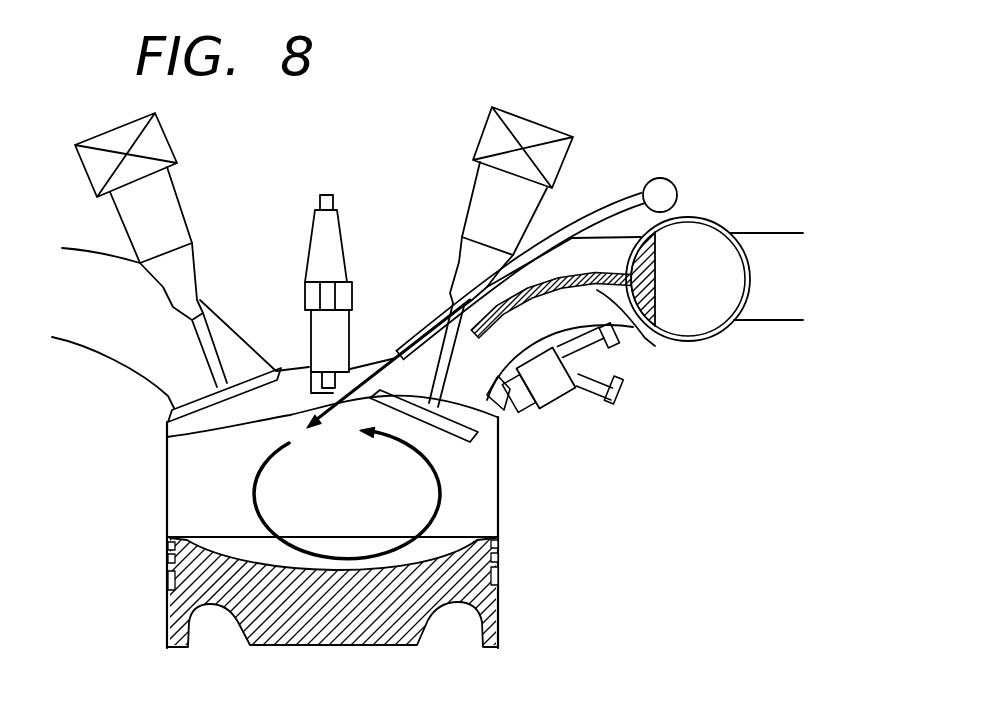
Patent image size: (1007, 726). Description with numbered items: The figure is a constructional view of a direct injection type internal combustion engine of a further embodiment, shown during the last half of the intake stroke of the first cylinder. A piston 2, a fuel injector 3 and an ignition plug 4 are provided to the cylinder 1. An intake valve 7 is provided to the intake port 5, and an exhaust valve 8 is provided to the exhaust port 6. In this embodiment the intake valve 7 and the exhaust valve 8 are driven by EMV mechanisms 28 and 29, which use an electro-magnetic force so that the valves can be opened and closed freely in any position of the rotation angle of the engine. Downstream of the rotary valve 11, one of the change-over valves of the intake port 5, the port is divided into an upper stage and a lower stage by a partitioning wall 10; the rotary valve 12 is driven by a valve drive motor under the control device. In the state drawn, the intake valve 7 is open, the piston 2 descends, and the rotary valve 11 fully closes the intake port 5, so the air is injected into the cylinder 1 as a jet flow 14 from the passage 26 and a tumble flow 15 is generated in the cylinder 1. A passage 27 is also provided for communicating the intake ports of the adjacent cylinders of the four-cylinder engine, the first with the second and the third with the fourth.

The cylinder 1 is at (166, 480).
The piston 2 is at (488, 601).
The fuel injector 3 is at (557, 400).
The ignition plug 4 is at (306, 296).
The intake port 5 is at (434, 308).
The exhaust port 6 is at (70, 248).
The intake valve 7 is at (486, 431).
The exhaust valve 8 is at (180, 395).
The partitioning wall 10 is at (633, 327).
The rotary valve 11 is at (746, 258).
The rotary valve 12 is at (664, 262).
The jet flow 14 is at (167, 436).
The tumble flow 15 is at (253, 490).
The passage 26 is at (601, 207).
The passage 27 is at (661, 178).
The EMV mechanism 28 is at (482, 135).
The EMV mechanism 29 is at (174, 143).